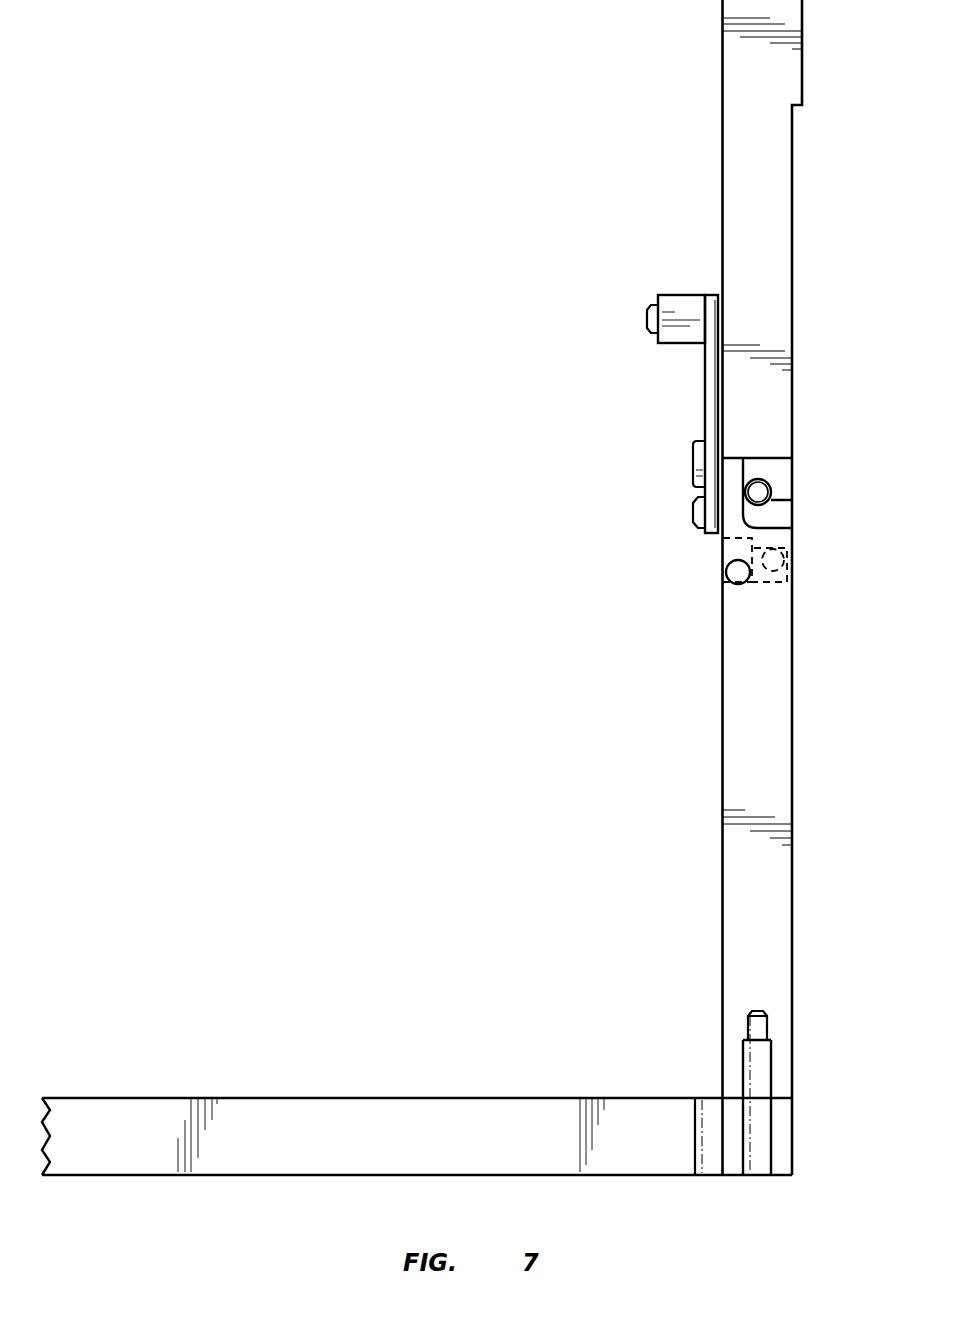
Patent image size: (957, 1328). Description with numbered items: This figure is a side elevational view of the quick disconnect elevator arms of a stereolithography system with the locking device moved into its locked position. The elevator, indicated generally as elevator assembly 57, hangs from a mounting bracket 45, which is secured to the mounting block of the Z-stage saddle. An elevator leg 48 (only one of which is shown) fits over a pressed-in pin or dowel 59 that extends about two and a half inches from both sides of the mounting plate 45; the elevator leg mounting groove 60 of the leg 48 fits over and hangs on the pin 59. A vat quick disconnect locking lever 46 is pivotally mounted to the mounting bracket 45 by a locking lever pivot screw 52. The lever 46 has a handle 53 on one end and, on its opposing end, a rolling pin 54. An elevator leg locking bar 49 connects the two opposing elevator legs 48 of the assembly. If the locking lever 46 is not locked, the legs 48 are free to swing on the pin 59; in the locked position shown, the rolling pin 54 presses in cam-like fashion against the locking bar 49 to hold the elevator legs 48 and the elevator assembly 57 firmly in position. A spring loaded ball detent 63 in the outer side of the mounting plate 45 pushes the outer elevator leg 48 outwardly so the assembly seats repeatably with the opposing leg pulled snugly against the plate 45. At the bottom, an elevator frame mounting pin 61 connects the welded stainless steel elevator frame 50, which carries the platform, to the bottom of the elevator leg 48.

The mounting bracket 45 is at (722, 88).
The vat quick disconnect locking lever 46 is at (705, 386).
The elevator leg 48 is at (722, 753).
The elevator leg locking bar 49 is at (726, 571).
The elevator frame 50 is at (416, 1098).
The locking lever pivot screw 52 is at (693, 462).
The handle 53 is at (687, 295).
The rolling pin 54 is at (693, 514).
The elevator 57 is at (598, 933).
The pin 59 is at (760, 478).
The elevator leg mounting groove 60 is at (772, 527).
The elevator frame mounting pin 61 is at (745, 1058).
The spring loaded ball detent 63 is at (775, 571).